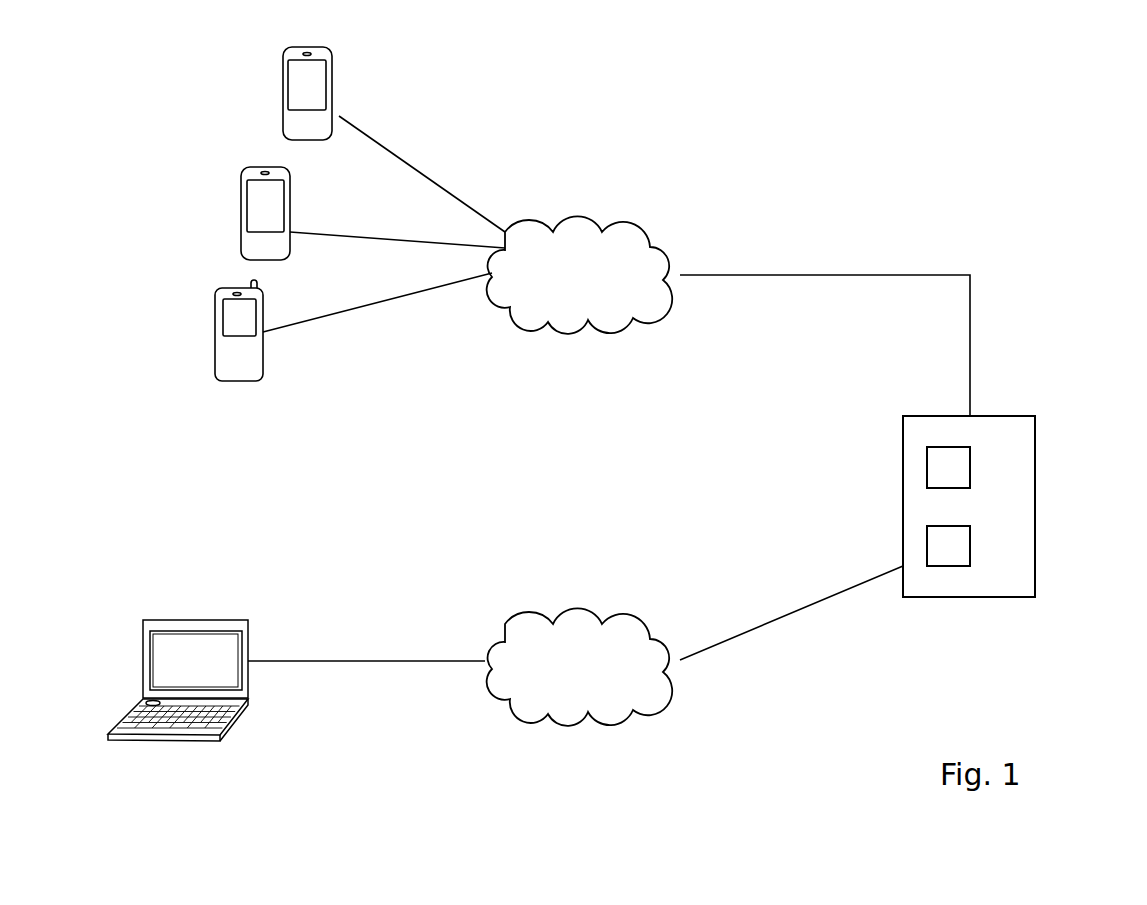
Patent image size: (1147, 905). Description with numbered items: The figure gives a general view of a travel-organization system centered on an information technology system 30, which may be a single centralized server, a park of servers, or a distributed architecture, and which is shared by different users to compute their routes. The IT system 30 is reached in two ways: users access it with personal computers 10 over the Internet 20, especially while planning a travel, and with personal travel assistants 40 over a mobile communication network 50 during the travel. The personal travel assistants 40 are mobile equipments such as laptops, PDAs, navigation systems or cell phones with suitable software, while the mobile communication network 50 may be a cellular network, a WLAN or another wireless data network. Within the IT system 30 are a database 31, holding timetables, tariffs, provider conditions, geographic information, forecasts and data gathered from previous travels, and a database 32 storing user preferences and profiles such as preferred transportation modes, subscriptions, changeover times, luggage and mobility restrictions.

The personal computer 10 is at (232, 723).
The Internet 20 is at (580, 667).
The information technology system 30 is at (978, 518).
The database 31 is at (937, 469).
The database 32 is at (937, 549).
The personal travel assistant 40 is at (284, 125).
The mobile communication network 50 is at (580, 275).